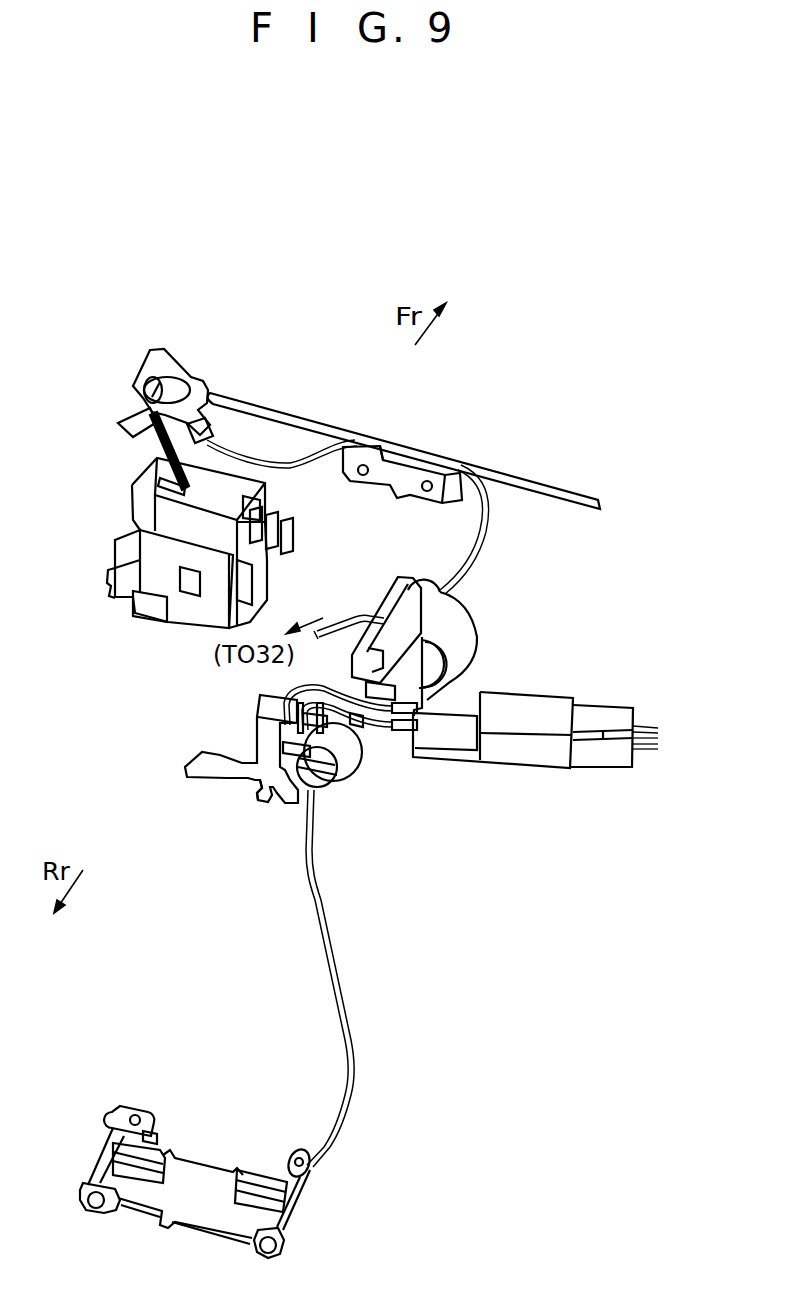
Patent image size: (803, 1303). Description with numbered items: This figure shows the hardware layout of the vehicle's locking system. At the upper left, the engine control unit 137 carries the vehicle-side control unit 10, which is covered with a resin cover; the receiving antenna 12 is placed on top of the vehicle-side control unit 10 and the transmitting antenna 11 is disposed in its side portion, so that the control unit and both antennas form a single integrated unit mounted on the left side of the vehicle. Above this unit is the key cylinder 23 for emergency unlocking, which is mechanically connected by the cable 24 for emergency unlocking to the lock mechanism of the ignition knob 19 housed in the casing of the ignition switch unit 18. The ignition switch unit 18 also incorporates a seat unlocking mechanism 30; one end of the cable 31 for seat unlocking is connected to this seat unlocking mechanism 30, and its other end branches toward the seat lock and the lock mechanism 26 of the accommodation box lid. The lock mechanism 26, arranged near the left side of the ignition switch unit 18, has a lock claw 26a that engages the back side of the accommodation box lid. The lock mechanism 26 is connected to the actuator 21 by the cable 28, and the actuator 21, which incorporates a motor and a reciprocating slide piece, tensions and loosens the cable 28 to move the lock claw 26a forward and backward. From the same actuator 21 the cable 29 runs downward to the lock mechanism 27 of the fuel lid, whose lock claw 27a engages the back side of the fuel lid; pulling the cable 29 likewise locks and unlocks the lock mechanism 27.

The vehicle-side control unit 10 is at (150, 560).
The transmitting antenna 11 is at (222, 595).
The receiving antenna 12 is at (163, 515).
The engine control unit 137 is at (118, 595).
The ignition switch unit 18 is at (465, 620).
The ignition knob 19 is at (327, 787).
The actuator 21 is at (548, 697).
The key cylinder for emergency unlocking 23 is at (160, 385).
The cable for emergency unlocking 24 is at (289, 457).
The lock mechanism of the accommodation box lid 26 is at (262, 735).
The lock claw 26a is at (260, 790).
The lock mechanism of the fuel lid 27 is at (220, 1165).
The lock claw 27a is at (157, 1130).
The cable 28 is at (390, 690).
The cable 29 is at (373, 733).
The seat unlocking mechanism 30 is at (398, 600).
The cable for seat unlocking 31 is at (356, 618).